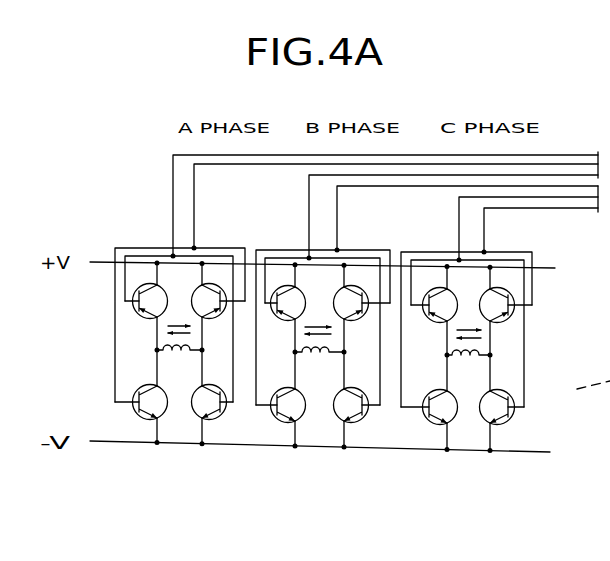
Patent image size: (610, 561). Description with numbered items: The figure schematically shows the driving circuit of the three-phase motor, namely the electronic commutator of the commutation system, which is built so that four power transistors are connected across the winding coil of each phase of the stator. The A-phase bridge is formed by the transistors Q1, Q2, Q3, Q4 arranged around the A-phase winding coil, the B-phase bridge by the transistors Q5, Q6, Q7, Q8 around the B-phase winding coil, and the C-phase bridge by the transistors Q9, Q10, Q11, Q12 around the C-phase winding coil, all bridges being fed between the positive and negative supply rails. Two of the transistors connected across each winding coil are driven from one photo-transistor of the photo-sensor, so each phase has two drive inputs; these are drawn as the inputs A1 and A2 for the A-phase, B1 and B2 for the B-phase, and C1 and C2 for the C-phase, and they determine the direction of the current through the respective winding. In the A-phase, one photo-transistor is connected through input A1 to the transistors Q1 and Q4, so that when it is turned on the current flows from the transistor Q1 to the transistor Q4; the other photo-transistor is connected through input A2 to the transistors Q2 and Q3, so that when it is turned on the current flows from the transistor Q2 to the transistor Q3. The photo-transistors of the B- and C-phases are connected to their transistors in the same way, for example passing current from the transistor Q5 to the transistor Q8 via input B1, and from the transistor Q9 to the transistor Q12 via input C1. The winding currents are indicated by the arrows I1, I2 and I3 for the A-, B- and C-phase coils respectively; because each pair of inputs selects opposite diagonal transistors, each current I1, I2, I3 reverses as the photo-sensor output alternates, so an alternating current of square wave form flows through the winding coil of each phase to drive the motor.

The transistor Q1 is at (143, 318).
The transistor Q2 is at (219, 318).
The transistor Q3 is at (140, 415).
The transistor Q4 is at (218, 416).
The transistor Q5 is at (284, 320).
The transistor Q6 is at (362, 320).
The transistor Q7 is at (279, 419).
The transistor Q8 is at (357, 421).
The transistor Q9 is at (434, 323).
The transistor Q10 is at (506, 324).
The transistor Q11 is at (429, 422).
The transistor Q12 is at (509, 424).
The A phase winding current I1 is at (179, 318).
The B phase winding current I2 is at (318, 320).
The C phase winding current I3 is at (469, 322).
The A phase drive signal input A1 is at (367, 207).
The A phase drive signal input A2 is at (395, 207).
The B phase drive signal input B1 is at (435, 218).
The B phase drive signal input B2 is at (467, 219).
The C phase drive signal input C1 is at (510, 230).
The C phase drive signal input C2 is at (540, 231).